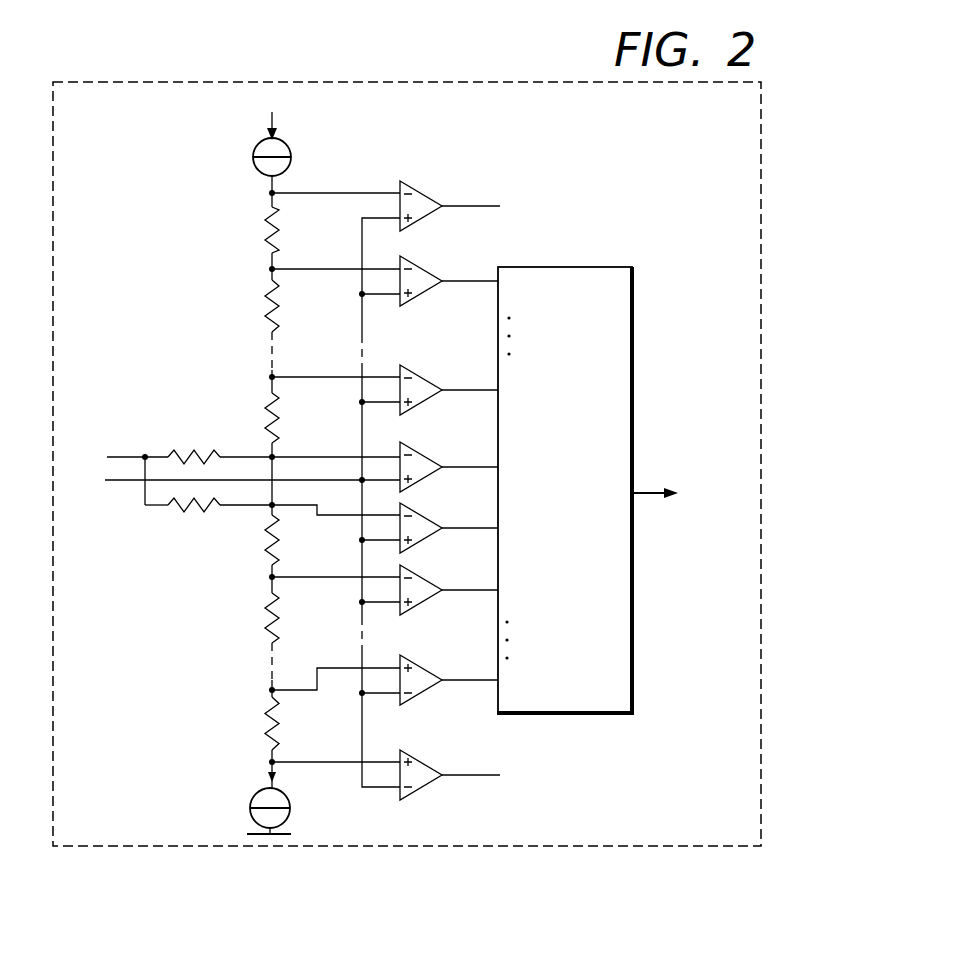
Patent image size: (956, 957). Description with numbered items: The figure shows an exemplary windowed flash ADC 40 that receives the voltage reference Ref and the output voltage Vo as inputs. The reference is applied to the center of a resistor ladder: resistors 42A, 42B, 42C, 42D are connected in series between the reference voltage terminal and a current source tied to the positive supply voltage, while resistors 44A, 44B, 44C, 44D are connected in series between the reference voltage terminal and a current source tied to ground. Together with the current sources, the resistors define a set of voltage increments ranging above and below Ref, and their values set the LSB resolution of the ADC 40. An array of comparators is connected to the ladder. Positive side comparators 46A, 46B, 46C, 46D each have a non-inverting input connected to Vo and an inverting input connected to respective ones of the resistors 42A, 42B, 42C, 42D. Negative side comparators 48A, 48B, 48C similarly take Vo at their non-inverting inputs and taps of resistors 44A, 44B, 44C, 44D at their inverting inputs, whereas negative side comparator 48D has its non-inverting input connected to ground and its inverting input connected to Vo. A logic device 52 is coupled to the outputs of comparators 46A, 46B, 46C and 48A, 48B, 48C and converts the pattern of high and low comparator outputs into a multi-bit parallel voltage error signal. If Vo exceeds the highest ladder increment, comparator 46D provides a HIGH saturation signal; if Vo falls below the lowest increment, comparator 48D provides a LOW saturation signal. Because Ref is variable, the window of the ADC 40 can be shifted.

The windowed flash ADC 40 is at (762, 352).
The resistor 42A is at (190, 454).
The resistor 42B is at (265, 421).
The resistor 42C is at (268, 315).
The resistor 42D is at (265, 240).
The resistor 44A is at (178, 508).
The resistor 44B is at (262, 542).
The resistor 44C is at (262, 623).
The resistor 44D is at (262, 731).
The positive side comparator 46A is at (426, 455).
The positive side comparator 46B is at (422, 378).
The positive side comparator 46C is at (424, 268).
The positive side comparator 46D is at (430, 192).
The negative side comparator 48A is at (428, 518).
The negative side comparator 48B is at (424, 578).
The negative side comparator 48C is at (424, 670).
The negative side comparator 48D is at (424, 765).
The logic device 52 is at (634, 383).